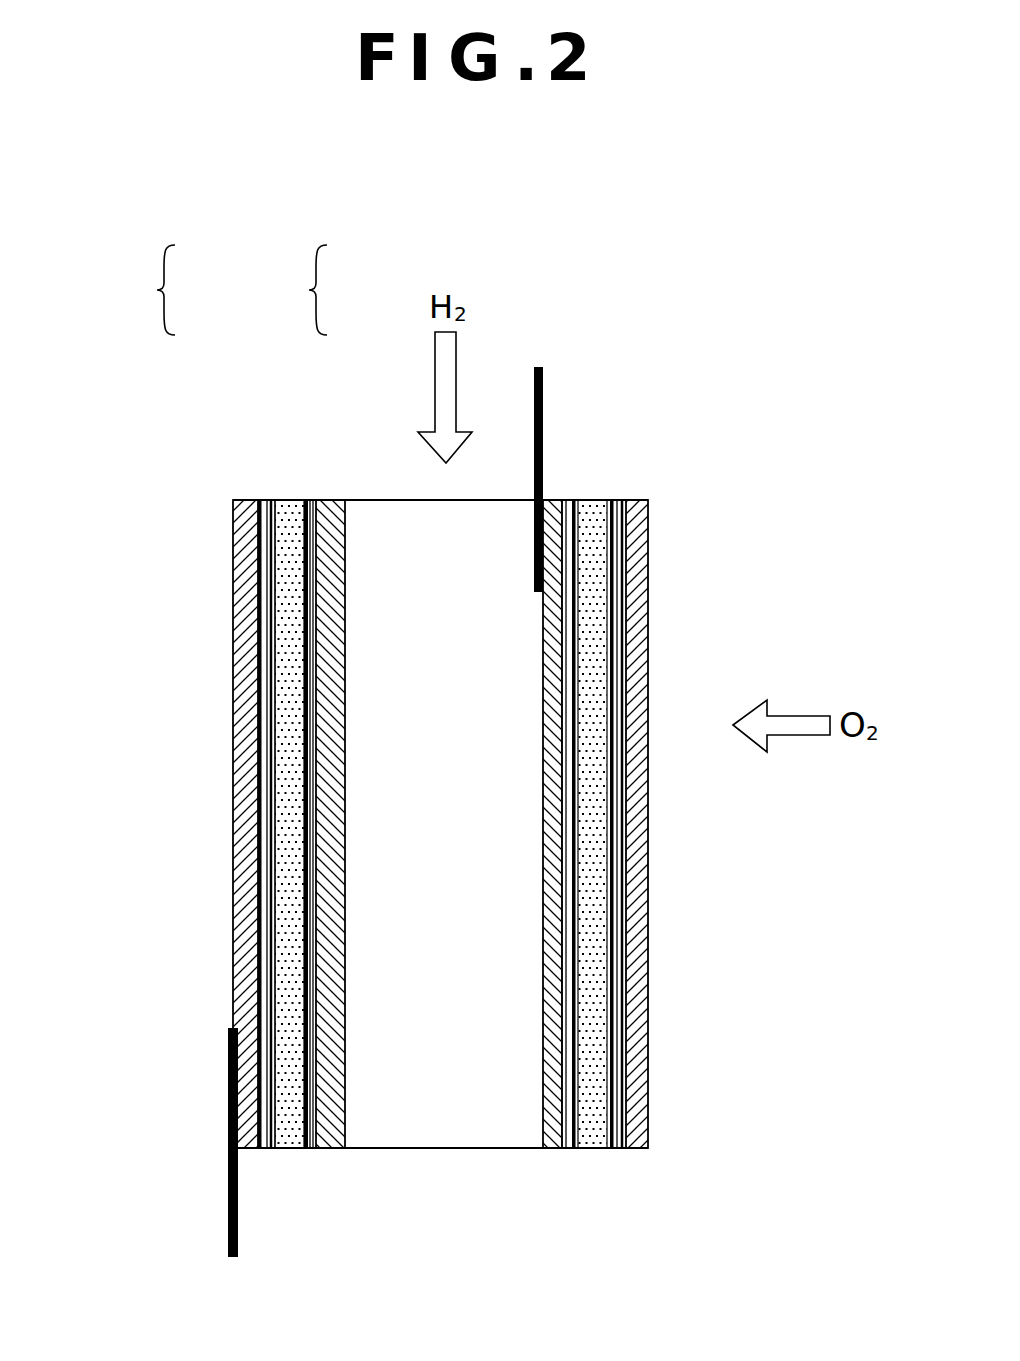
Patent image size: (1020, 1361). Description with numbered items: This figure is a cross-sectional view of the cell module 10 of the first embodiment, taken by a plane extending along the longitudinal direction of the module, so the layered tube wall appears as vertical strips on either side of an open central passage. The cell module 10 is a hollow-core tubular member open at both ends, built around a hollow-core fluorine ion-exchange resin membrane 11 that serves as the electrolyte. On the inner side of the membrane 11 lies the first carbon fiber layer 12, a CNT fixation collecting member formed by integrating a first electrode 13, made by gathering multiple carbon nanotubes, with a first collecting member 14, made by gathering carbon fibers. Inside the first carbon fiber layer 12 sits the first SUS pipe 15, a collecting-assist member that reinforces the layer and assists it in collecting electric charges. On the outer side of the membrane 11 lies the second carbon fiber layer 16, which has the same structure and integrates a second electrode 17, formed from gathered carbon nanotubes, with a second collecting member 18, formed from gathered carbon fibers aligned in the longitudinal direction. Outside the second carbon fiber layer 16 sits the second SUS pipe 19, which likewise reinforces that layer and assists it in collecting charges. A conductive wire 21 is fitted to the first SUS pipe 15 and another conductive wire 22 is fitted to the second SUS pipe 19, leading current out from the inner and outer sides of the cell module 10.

The cell module 10 is at (503, 1170).
The hollow-core fluorine ion-exchange resin membrane 11 is at (290, 507).
The first carbon fiber layer 12 is at (424, 696).
The first electrode 13 is at (440, 698).
The first collecting member 14 is at (308, 507).
The first SUS pipe 15 is at (337, 507).
The second carbon fiber layer 16 is at (372, 696).
The second electrode 17 is at (396, 698).
The second collecting member 18 is at (263, 507).
The second SUS pipe 19 is at (241, 514).
The conductive wire 21 is at (538, 367).
The conductive wire 22 is at (228, 1198).